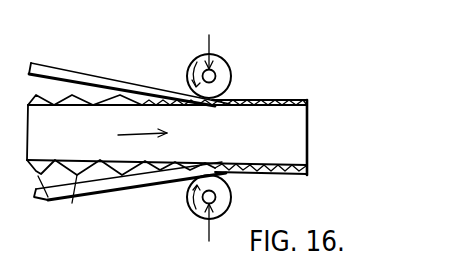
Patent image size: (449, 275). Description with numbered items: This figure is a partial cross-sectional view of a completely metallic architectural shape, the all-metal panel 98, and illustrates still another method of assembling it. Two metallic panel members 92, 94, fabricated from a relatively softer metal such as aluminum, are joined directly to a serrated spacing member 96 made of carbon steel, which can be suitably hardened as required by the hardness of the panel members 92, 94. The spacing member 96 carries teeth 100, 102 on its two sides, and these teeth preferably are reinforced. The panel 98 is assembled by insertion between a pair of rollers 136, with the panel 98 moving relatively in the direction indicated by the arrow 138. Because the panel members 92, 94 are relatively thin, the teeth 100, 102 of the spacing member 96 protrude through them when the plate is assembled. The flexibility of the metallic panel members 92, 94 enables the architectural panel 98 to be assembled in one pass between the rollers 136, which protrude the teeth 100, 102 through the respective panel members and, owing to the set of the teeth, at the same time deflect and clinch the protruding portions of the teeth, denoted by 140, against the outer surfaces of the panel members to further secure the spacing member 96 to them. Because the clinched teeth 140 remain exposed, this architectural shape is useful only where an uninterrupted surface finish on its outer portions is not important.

The metallic panel member 92 is at (263, 100).
The metallic panel member 94 is at (258, 174).
The serrated spacing member 96 is at (297, 133).
The architectural panel 98 is at (131, 221).
The teeth of the spacing member 100 is at (146, 88).
The teeth of the spacing member 102 is at (52, 200).
The rollers 136 is at (215, 67).
The arrow 138 is at (136, 137).
The clinched protruding portions of the teeth 140 is at (286, 101).